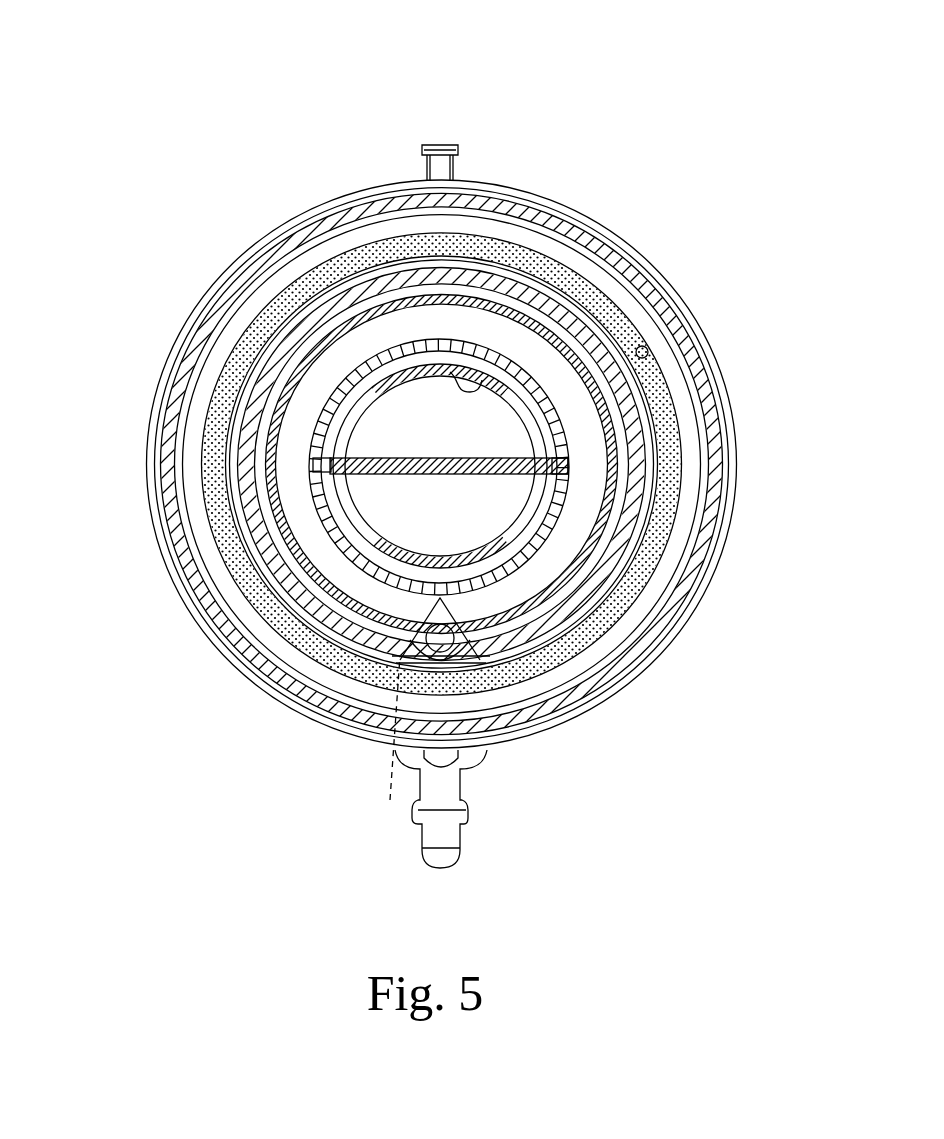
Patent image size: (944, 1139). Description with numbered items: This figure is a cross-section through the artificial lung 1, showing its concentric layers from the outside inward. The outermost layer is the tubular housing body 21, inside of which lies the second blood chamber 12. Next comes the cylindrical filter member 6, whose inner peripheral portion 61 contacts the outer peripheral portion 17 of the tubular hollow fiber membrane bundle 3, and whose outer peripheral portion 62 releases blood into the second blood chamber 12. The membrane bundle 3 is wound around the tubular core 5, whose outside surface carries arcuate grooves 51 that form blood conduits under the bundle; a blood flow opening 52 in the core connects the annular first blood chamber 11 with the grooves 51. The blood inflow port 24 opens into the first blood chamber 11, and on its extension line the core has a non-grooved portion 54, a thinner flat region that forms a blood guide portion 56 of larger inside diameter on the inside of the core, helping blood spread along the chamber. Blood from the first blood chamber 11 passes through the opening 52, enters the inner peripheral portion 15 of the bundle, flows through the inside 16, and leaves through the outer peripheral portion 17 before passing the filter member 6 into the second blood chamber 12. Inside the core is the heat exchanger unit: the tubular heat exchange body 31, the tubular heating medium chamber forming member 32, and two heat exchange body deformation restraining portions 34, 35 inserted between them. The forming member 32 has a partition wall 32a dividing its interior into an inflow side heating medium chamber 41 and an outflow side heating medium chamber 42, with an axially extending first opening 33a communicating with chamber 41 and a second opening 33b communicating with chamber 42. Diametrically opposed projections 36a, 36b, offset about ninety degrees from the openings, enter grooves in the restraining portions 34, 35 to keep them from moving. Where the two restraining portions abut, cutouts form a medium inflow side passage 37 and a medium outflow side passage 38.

The artificial lung 1 is at (722, 120).
The tubular hollow fiber membrane bundle 3 is at (246, 268).
The tubular core 5 is at (320, 618).
The filter member 6 is at (541, 248).
The first blood chamber 11 is at (270, 590).
The second blood chamber 12 is at (630, 592).
The inner peripheral portion of the tubular hollow fiber membrane bundle 15 is at (240, 304).
The inside of the tubular hollow fiber membrane bundle 16 is at (442, 464).
The outer peripheral portion of the tubular hollow fiber membrane bundle 17 is at (292, 237).
The tubular housing body 21 is at (163, 423).
The blood inflow port 24 is at (385, 708).
The tubular heat exchange body 31 is at (547, 332).
The tubular heating medium chamber forming member 32 is at (562, 442).
The partition wall 32a is at (460, 512).
The first opening 33a is at (562, 354).
The second opening 33b is at (503, 664).
The heat exchange body deformation restraining portion 34 is at (472, 336).
The heat exchange body deformation restraining portion 35 is at (332, 304).
The projection 36a is at (572, 471).
The projection 36b is at (320, 473).
The medium inflow side passage 37 is at (366, 362).
The medium outflow side passage 38 is at (384, 654).
The inflow side heating medium chamber 41 is at (392, 428).
The outflow side heating medium chamber 42 is at (592, 652).
The grooves 51 is at (686, 394).
The blood flow opening 52 is at (437, 280).
The non-grooved portion 54 is at (377, 748).
The blood guide portion 56 is at (505, 724).
The inner peripheral portion of the filter member 61 is at (652, 348).
The outer peripheral portion of the filter member 62 is at (606, 298).